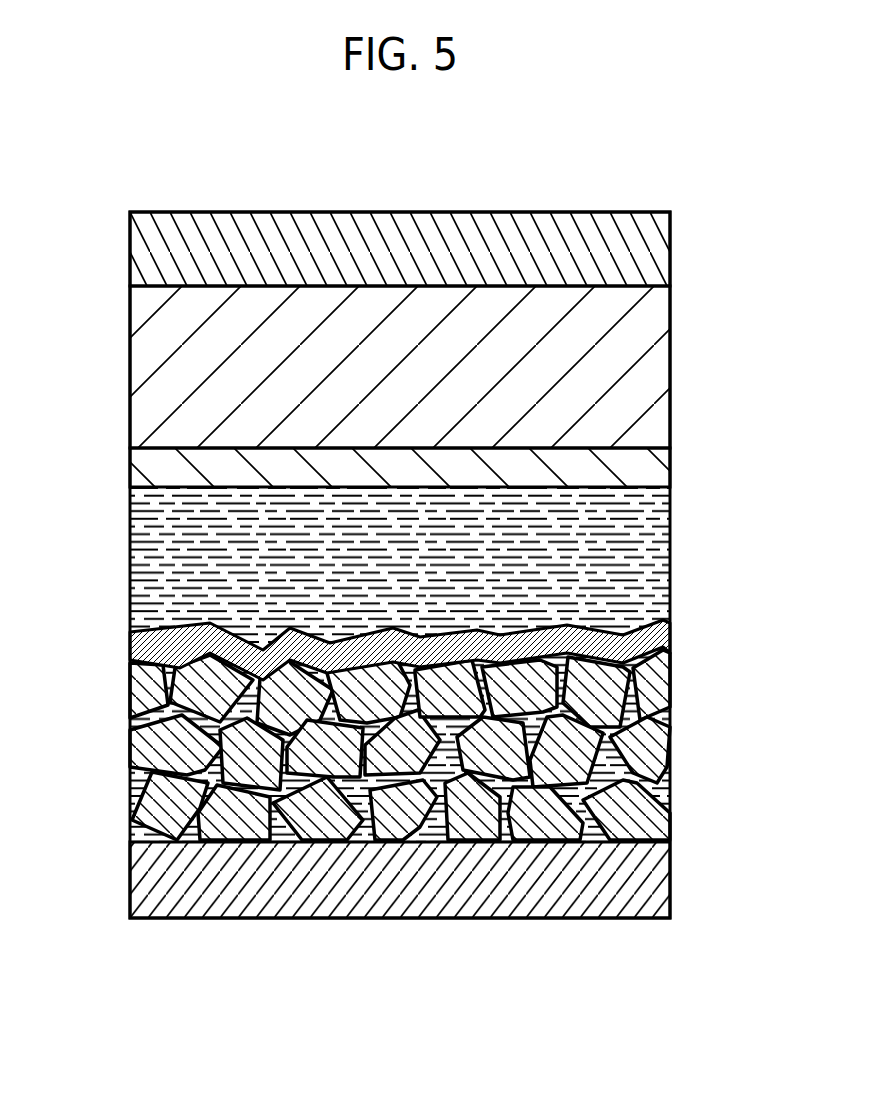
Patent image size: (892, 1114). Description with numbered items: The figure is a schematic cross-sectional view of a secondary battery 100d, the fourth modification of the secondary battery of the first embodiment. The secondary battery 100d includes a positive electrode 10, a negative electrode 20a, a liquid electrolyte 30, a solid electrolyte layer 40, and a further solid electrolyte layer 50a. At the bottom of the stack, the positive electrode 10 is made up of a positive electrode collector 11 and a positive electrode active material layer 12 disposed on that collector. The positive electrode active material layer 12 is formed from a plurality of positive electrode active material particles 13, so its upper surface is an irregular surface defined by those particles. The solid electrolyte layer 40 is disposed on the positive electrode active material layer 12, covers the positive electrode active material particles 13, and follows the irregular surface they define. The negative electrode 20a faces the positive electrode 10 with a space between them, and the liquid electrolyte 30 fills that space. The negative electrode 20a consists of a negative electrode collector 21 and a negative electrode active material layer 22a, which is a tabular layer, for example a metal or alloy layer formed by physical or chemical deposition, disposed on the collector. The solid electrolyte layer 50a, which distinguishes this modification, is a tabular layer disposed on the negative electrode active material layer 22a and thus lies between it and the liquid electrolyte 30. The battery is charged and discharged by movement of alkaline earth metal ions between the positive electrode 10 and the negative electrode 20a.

The secondary battery 100d is at (683, 180).
The negative electrode 20a is at (750, 227).
The negative electrode collector 21 is at (642, 253).
The negative electrode active material layer 22a is at (642, 363).
The solid electrolyte layer 50a is at (642, 468).
The liquid electrolyte 30 is at (642, 552).
The solid electrolyte layer 40 is at (642, 642).
The positive electrode 10 is at (742, 732).
The positive electrode active material layer 12 is at (688, 657).
The positive electrode active material particles 13 is at (145, 690).
The positive electrode collector 11 is at (642, 883).